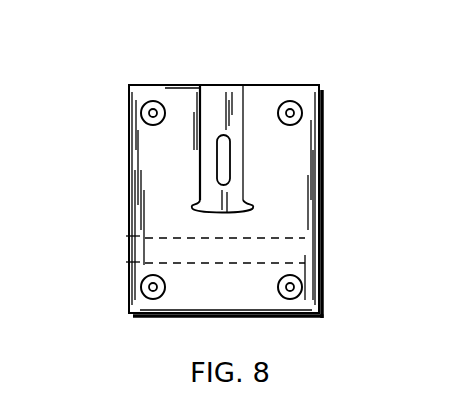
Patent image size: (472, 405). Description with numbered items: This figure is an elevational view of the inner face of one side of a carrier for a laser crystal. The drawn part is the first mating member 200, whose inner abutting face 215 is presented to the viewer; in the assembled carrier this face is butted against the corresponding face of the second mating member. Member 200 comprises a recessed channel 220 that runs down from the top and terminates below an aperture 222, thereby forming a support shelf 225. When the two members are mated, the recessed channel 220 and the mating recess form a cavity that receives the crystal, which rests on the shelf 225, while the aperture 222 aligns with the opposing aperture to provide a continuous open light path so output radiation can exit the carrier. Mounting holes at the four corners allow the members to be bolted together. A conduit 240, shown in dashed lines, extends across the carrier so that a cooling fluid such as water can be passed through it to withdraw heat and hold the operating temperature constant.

The first mating member 200 is at (129, 307).
The inner face 215 is at (260, 93).
The recessed channel 220 is at (212, 93).
The aperture 222 is at (226, 160).
The support shelf 225 is at (247, 213).
The conduit 240 is at (129, 243).